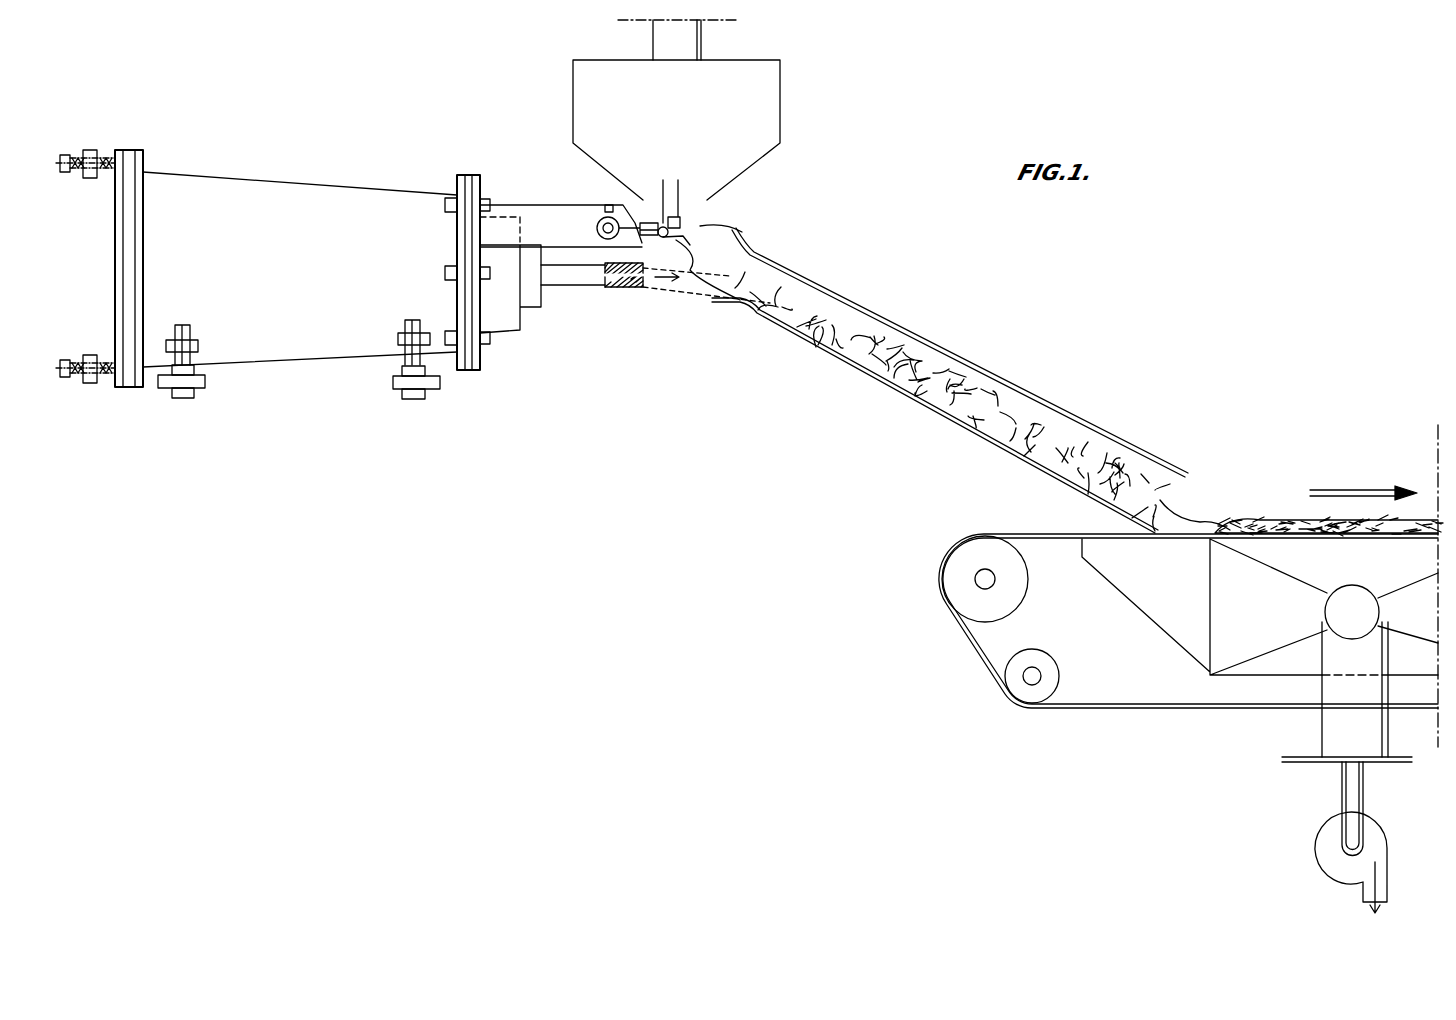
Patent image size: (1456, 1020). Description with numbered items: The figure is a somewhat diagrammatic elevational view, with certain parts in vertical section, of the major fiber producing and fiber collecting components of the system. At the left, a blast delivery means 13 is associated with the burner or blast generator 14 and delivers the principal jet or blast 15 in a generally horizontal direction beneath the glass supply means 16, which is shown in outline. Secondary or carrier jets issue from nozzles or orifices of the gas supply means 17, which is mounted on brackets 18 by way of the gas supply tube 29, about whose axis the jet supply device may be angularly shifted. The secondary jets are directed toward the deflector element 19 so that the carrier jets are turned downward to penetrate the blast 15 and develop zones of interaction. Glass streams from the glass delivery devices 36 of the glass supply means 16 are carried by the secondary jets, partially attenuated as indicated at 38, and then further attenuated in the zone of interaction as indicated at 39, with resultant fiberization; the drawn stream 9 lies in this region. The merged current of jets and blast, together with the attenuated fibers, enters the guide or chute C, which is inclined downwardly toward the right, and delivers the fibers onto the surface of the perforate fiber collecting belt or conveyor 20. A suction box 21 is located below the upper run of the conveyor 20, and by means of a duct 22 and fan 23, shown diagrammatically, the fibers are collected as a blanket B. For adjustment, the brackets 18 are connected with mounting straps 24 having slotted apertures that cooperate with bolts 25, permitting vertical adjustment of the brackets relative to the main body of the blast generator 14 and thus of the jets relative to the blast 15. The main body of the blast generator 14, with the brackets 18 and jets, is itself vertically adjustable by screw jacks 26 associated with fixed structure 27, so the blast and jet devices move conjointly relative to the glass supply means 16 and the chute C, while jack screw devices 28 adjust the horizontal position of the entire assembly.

The material stream 9 is at (708, 263).
The blast delivery means 13 is at (578, 287).
The blast generator 14 is at (265, 172).
The blast 15 is at (668, 288).
The glass supply means 16 is at (797, 87).
The gas supply means 17 is at (640, 206).
The brackets 18 is at (570, 207).
The deflector element 19 is at (665, 212).
The fiber collecting conveyor 20 is at (1095, 533).
The suction box 21 is at (1183, 628).
The duct 22 is at (1322, 730).
The fan 23 is at (1322, 842).
The mounting straps 24 is at (487, 312).
The bolts 25 is at (480, 198).
The screw jacks 26 is at (188, 362).
The fixed structure 27 is at (198, 382).
The jack screw devices 28 is at (100, 152).
The gas supply tube 29 is at (629, 264).
The glass delivery devices 36 is at (690, 232).
The partially attenuated streams 38 is at (740, 248).
The additional attenuation 39 is at (812, 292).
The blanket B is at (1270, 520).
The chute C is at (932, 344).